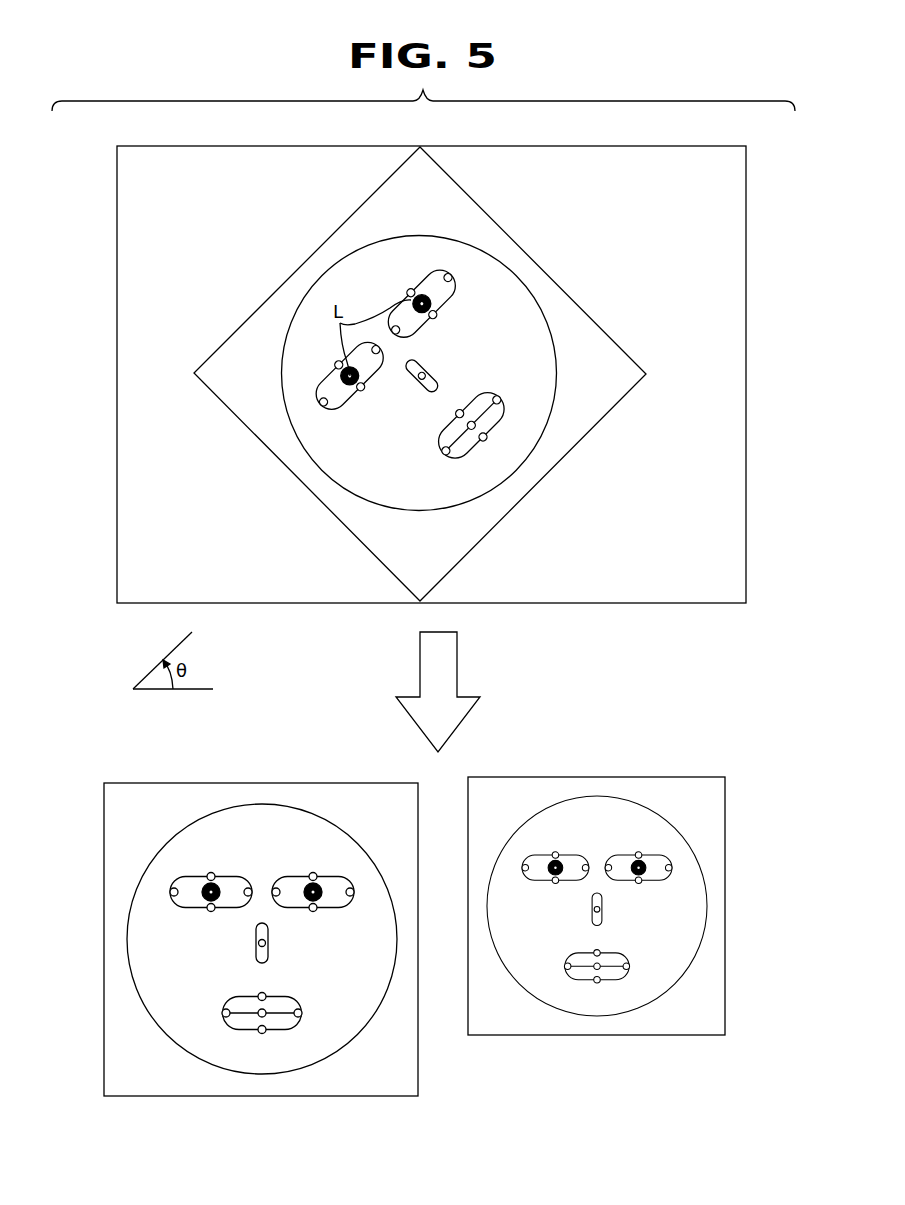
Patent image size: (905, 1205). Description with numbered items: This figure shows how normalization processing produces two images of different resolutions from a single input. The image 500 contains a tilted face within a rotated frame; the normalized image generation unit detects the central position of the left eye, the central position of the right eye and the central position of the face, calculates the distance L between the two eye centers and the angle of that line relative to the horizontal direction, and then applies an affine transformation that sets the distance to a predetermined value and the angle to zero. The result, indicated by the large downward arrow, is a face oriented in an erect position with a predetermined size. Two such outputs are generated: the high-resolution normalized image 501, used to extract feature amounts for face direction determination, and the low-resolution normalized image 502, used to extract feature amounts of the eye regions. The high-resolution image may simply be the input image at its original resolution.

The image 500 is at (117, 370).
The normalized image 501 is at (104, 966).
The normalized image 502 is at (727, 897).